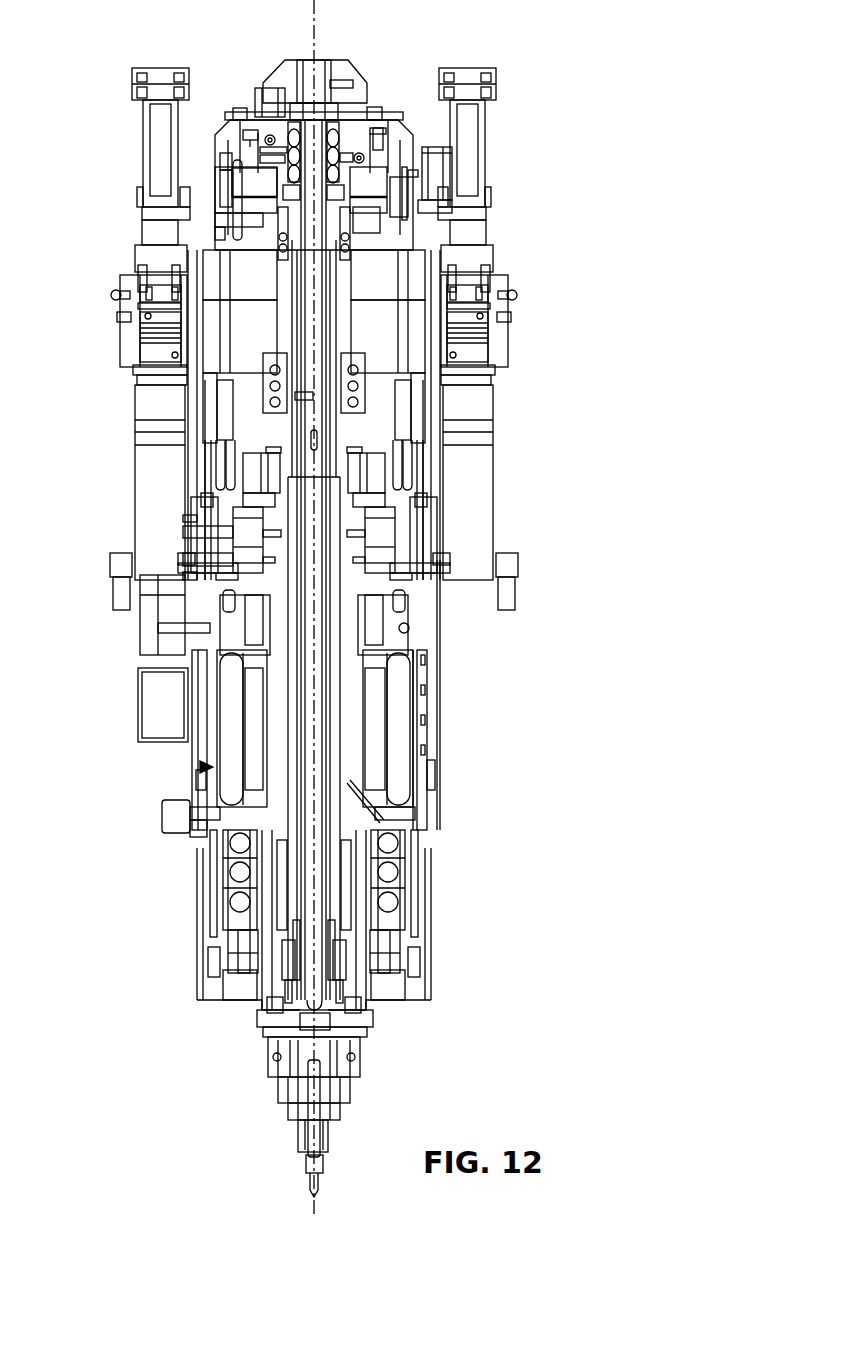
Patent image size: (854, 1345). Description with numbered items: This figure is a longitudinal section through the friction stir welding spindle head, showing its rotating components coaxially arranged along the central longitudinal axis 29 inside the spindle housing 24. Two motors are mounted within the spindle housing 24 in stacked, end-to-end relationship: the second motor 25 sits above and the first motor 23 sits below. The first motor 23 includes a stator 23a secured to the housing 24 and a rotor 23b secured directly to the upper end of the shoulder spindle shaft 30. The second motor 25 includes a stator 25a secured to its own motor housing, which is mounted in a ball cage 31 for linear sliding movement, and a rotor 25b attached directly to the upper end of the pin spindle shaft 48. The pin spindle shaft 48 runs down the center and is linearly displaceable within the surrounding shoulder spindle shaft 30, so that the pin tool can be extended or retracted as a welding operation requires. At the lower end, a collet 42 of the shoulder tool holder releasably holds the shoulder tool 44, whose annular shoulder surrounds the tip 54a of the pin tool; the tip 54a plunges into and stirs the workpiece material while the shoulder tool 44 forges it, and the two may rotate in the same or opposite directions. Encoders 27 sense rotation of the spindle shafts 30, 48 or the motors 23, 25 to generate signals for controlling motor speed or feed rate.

The longitudinal axis 29 is at (326, 14).
The stator 25a is at (250, 298).
The rotor 25b is at (267, 327).
The second motor 25 is at (412, 325).
The ball cage 31 is at (225, 422).
The encoders 27 is at (377, 237).
The pin spindle shaft 48 is at (323, 590).
The shoulder spindle shaft 30 is at (293, 757).
The first motor 23 is at (200, 767).
The spindle housing 24 is at (430, 658).
The rotor 23b is at (372, 727).
The stator 23a is at (398, 761).
The collet 42 is at (307, 1102).
The shoulder tool 44 is at (320, 1163).
The tip 54a is at (312, 1178).